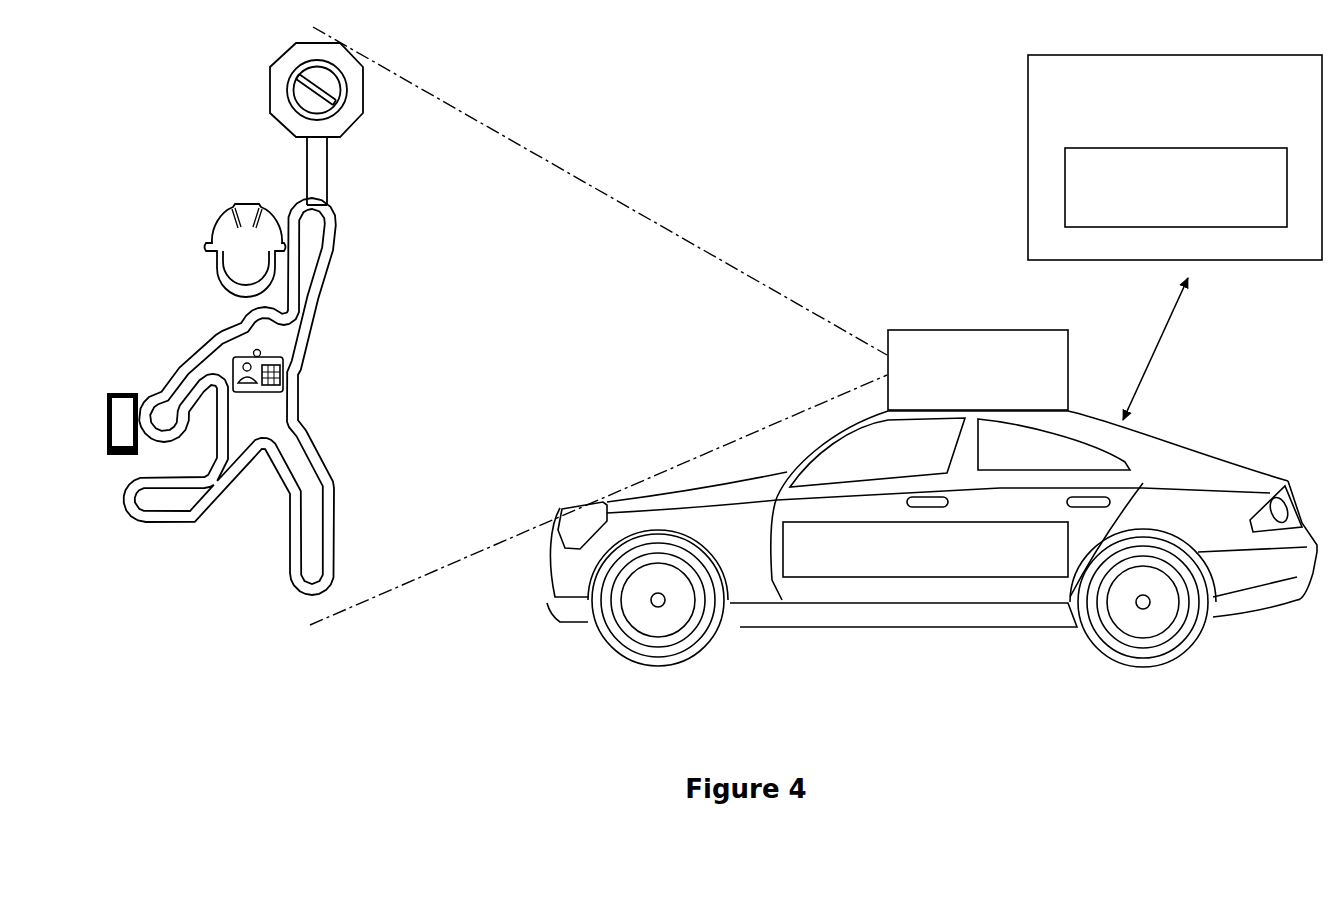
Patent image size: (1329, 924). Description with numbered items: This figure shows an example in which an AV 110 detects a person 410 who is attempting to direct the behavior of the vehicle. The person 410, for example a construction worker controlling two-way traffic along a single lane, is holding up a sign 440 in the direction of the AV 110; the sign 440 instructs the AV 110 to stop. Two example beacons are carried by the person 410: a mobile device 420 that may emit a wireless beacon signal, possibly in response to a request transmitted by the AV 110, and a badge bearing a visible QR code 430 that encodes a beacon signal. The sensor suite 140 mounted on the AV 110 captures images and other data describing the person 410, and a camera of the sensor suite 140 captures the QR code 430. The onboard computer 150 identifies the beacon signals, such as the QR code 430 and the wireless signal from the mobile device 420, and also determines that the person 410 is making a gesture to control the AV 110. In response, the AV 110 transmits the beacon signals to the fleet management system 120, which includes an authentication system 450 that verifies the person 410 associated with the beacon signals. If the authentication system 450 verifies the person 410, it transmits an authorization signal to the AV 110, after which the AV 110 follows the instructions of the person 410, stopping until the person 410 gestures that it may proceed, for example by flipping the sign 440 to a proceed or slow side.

The AV 110 is at (1260, 581).
The fleet management system 120 is at (1234, 123).
The sensor suite 140 is at (959, 393).
The onboard computer 150 is at (1043, 559).
The person 410 is at (338, 467).
The mobile device 420 is at (117, 382).
The QR code 430 is at (285, 370).
The sign 440 is at (353, 92).
The authentication system 450 is at (1236, 215).